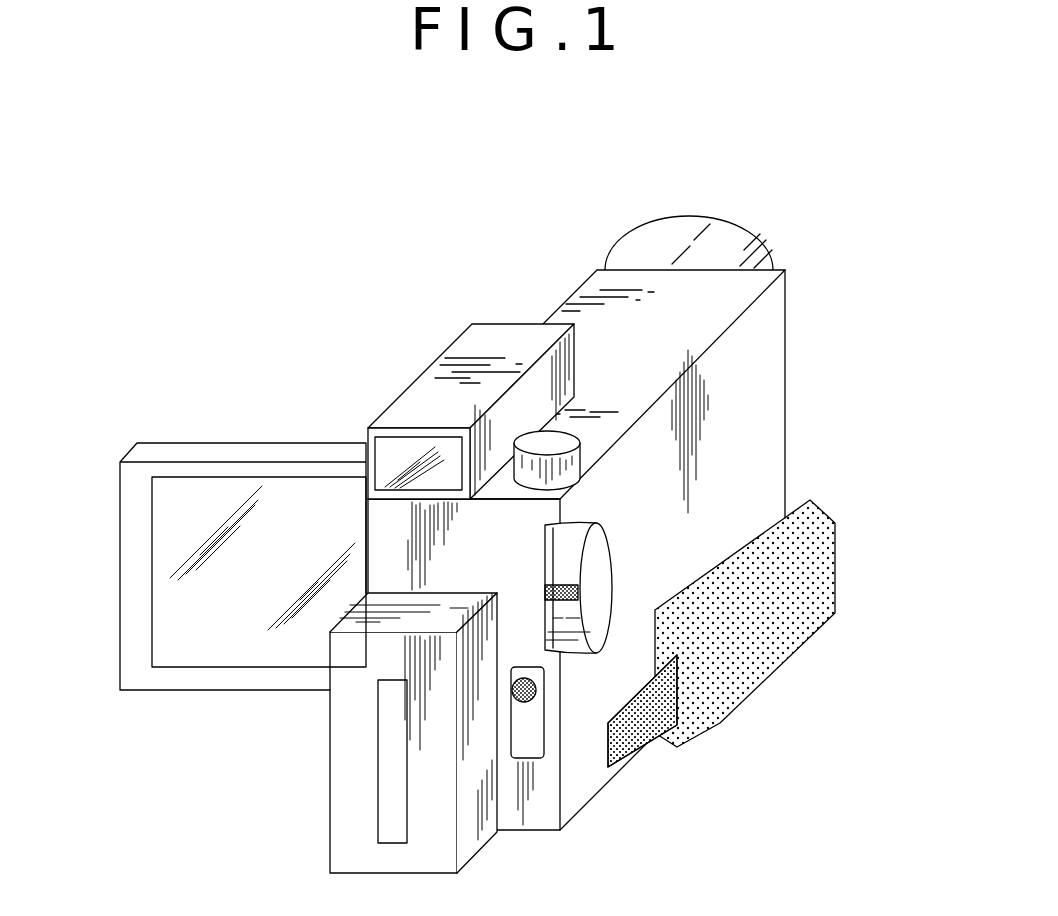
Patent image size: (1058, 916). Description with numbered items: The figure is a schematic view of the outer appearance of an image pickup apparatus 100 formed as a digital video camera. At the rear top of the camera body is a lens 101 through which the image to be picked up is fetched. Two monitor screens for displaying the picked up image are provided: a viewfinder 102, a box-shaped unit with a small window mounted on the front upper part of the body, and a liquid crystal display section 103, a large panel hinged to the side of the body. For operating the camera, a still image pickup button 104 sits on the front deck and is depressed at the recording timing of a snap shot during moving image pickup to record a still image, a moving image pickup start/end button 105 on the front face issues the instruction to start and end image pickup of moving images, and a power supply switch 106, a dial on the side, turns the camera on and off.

The image pickup apparatus 100 is at (802, 827).
The lens 101 is at (690, 214).
The viewfinder 102 is at (368, 428).
The liquid crystal display section 103 is at (120, 462).
The still image pickup button 104 is at (580, 437).
The moving image pickup start/end button 105 is at (544, 747).
The power supply switch 106 is at (614, 558).